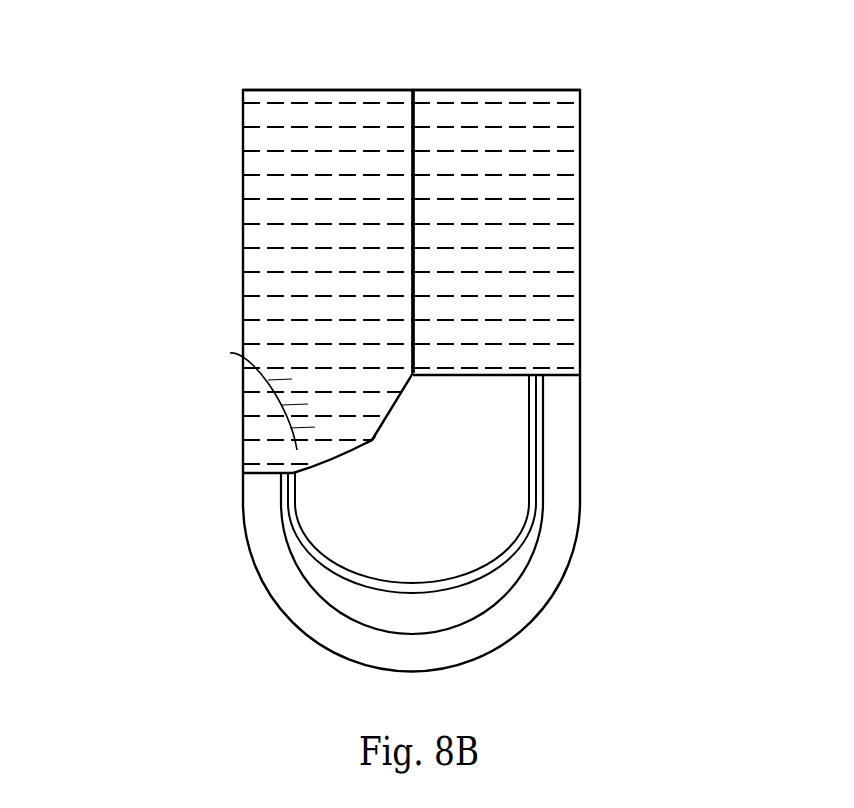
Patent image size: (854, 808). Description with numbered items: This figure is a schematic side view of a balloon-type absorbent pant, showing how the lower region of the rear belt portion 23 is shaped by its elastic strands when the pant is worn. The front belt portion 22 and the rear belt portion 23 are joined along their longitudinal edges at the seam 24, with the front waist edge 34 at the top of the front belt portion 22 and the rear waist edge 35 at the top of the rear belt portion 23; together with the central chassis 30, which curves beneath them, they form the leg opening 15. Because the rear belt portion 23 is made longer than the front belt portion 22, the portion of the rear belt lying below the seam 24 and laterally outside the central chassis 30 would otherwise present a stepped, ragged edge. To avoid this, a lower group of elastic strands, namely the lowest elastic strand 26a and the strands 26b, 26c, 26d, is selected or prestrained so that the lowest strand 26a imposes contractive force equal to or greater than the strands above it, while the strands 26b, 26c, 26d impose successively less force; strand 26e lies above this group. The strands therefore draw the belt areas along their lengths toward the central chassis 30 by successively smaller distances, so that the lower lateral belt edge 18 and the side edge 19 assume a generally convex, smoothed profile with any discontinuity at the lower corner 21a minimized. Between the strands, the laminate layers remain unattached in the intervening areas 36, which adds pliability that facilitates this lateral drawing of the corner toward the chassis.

The leg opening 15 is at (514, 459).
The lower lateral belt edge 18 is at (323, 468).
The side edge 19 is at (408, 396).
The lower corner 21a is at (373, 441).
The front belt portion 22 is at (578, 158).
The rear belt portion 23 is at (257, 183).
The seam 24 is at (414, 140).
The lowest elastic strand 26a is at (258, 465).
The elastic strand 26b is at (258, 443).
The elastic strand 26c is at (258, 418).
The elastic strand 26d is at (258, 394).
The elastic strand 26e is at (295, 367).
The central chassis 30 is at (281, 624).
The front waist edge 34 is at (531, 90).
The rear waist edge 35 is at (296, 90).
The intervening areas 36 is at (230, 353).